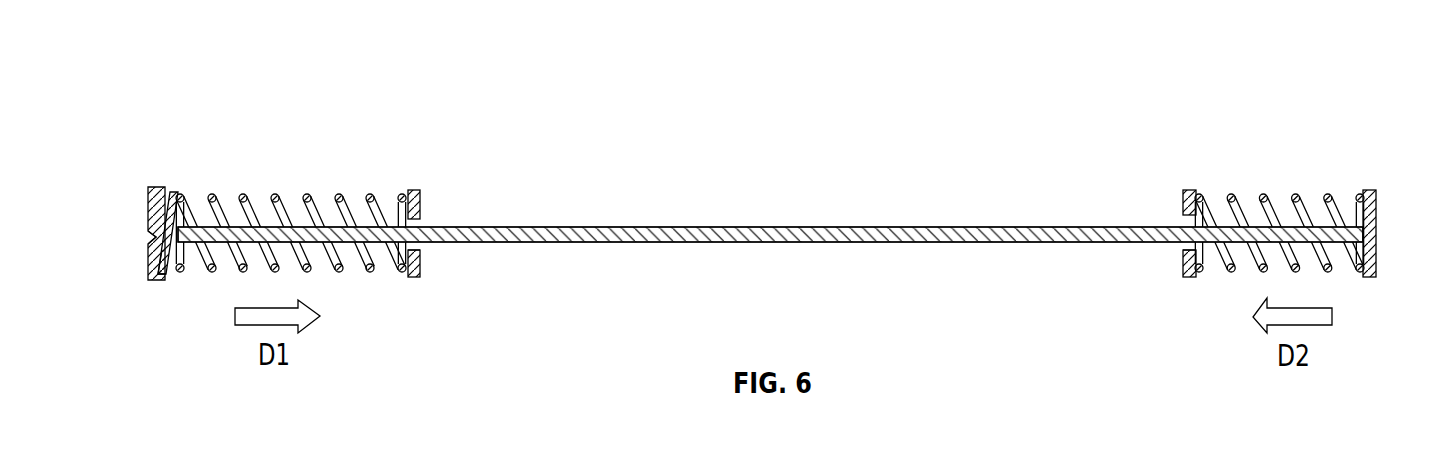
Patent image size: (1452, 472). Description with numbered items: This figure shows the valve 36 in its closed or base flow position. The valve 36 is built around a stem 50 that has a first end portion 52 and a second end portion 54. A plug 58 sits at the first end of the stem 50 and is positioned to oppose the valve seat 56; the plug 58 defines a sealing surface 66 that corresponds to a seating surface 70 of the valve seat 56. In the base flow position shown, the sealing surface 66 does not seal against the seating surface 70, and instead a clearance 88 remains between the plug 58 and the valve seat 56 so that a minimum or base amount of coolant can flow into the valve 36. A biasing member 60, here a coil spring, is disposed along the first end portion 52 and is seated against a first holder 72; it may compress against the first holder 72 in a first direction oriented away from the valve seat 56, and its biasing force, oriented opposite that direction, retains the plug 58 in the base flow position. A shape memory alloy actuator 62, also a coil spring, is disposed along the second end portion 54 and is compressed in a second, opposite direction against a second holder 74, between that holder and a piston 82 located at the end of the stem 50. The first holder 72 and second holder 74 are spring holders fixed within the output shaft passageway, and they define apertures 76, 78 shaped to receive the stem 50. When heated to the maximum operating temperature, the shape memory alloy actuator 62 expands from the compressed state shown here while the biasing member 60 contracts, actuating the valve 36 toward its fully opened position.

The valve 36 is at (144, 48).
The stem 50 is at (772, 243).
The first end portion 52 is at (236, 163).
The second end portion 54 is at (1293, 115).
The valve seat 56 is at (170, 205).
The plug 58 is at (177, 257).
The biasing member 60 is at (340, 192).
The shape memory alloy actuator 62 is at (1295, 190).
The sealing surface 66 is at (148, 188).
The seating surface 70 is at (150, 240).
The first holder 72 is at (415, 190).
The second holder 74 is at (1188, 190).
The aperture 76 is at (420, 247).
The aperture 78 is at (1187, 247).
The piston 82 is at (1376, 215).
The clearance 88 is at (150, 230).